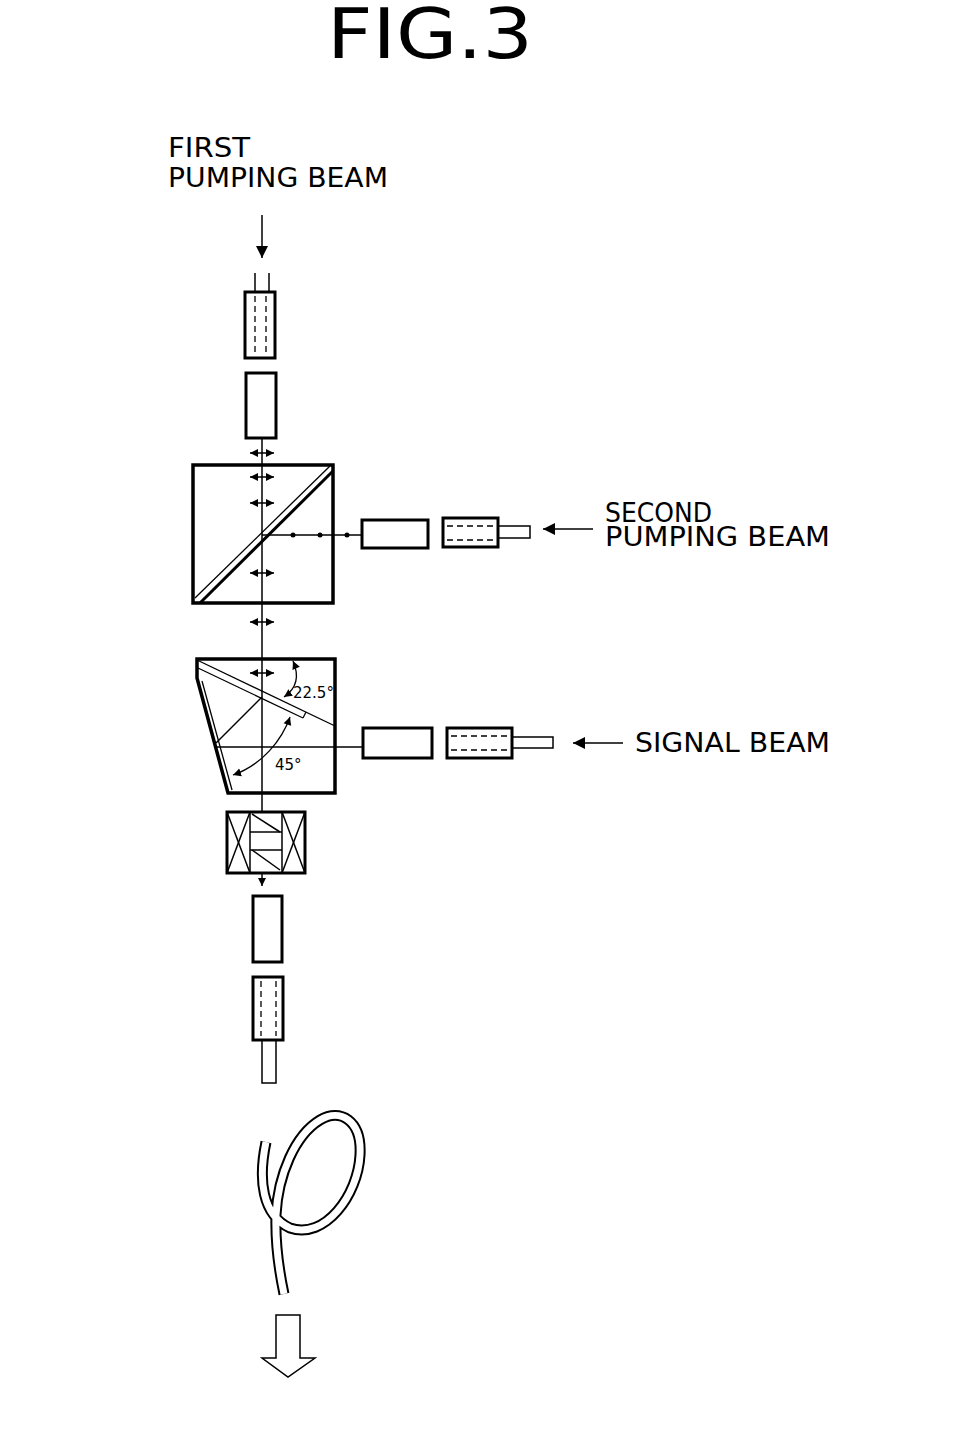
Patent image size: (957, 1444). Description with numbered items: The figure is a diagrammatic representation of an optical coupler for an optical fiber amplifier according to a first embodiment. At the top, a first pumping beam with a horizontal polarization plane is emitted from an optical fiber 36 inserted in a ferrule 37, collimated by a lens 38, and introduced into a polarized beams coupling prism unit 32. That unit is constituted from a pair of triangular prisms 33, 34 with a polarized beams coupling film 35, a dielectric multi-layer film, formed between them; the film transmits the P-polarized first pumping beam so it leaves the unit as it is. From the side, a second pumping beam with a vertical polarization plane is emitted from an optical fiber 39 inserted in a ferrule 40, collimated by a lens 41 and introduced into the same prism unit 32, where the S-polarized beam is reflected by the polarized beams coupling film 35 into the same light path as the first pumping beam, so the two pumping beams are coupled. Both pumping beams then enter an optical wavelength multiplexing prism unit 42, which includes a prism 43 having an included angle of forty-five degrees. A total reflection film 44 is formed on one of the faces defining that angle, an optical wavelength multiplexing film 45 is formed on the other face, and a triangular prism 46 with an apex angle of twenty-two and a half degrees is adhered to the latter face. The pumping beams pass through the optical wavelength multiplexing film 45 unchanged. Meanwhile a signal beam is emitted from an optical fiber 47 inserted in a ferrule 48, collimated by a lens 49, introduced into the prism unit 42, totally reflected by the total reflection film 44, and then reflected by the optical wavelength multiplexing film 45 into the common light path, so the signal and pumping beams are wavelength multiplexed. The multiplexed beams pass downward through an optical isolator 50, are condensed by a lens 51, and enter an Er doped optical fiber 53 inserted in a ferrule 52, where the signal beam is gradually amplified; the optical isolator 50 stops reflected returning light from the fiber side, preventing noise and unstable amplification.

The polarized beams coupling prism unit 32 is at (336, 460).
The triangular prism 33 is at (193, 478).
The triangular prism 34 is at (334, 481).
The polarized beams coupling film 35 is at (237, 557).
The optical fiber 36 is at (268, 282).
The ferrule 37 is at (277, 323).
The lens 38 is at (277, 393).
The optical fiber 39 is at (515, 518).
The ferrule 40 is at (483, 547).
The lens 41 is at (390, 520).
The optical wavelength multiplexing prism unit 42 is at (342, 664).
The prism 43 is at (334, 780).
The total reflection film 44 is at (203, 725).
The optical wavelength multiplexing film 45 is at (197, 660).
The triangular prism 46 is at (307, 660).
The optical fiber 47 is at (533, 737).
The ferrule 48 is at (497, 758).
The lens 49 is at (400, 728).
The optical isolator 50 is at (306, 850).
The lens 51 is at (283, 930).
The ferrule 52 is at (285, 1013).
The Er doped optical fiber 53 is at (278, 1060).